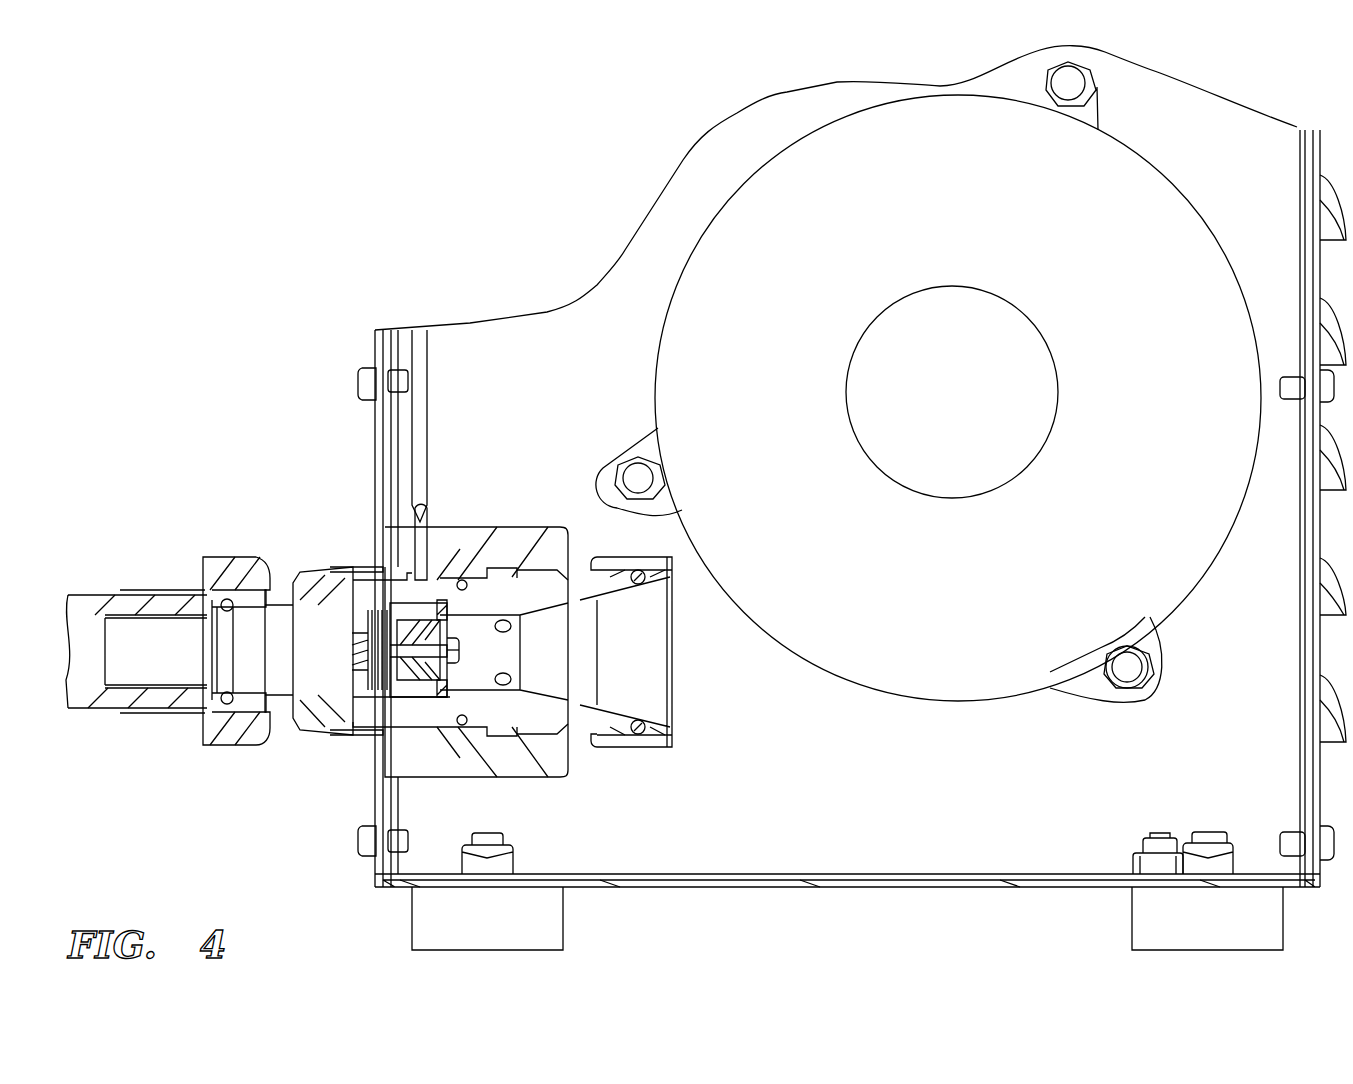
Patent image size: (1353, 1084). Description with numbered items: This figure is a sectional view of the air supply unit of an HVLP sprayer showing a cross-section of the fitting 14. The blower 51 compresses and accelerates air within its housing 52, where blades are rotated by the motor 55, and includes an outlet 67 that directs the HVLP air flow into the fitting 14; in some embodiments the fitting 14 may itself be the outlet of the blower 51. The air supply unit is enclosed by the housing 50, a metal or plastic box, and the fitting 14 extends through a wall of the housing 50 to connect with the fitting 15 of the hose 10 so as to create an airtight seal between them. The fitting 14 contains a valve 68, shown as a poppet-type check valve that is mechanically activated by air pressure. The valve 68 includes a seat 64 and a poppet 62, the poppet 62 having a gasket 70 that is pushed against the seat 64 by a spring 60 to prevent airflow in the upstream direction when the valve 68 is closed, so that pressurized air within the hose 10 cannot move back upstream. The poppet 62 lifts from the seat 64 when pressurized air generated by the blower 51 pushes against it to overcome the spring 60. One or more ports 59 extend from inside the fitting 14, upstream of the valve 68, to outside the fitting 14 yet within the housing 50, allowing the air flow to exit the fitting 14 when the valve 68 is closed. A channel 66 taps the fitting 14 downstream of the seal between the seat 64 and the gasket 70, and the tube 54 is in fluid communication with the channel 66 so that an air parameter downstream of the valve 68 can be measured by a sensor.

The hose 10 is at (90, 592).
The fitting 14 is at (310, 727).
The fitting 15 is at (228, 555).
The housing 50 is at (873, 887).
The blower 51 is at (732, 168).
The housing 52 is at (780, 148).
The tube 54 is at (420, 372).
The motor 55 is at (912, 286).
The port 59 is at (503, 618).
The spring 60 is at (375, 698).
The poppet 62 is at (450, 675).
The seat 64 is at (455, 604).
The channel 66 is at (410, 548).
The outlet 67 is at (735, 748).
The valve 68 is at (470, 655).
The gasket 70 is at (440, 697).